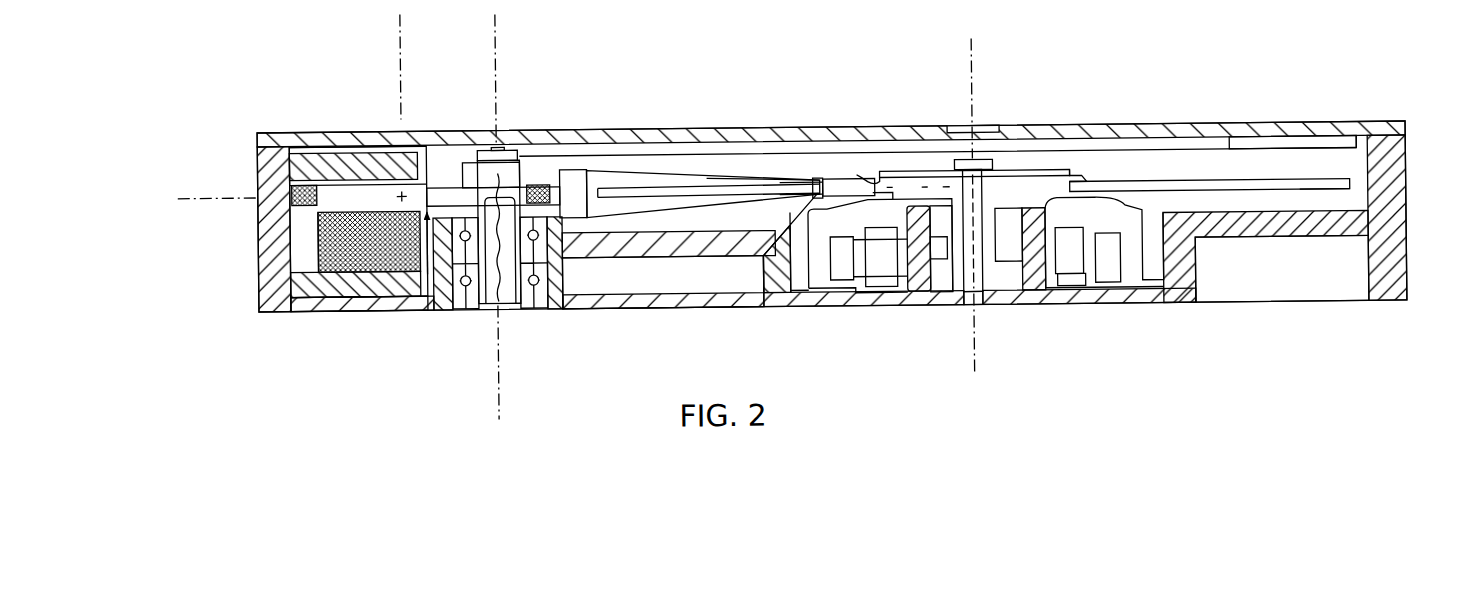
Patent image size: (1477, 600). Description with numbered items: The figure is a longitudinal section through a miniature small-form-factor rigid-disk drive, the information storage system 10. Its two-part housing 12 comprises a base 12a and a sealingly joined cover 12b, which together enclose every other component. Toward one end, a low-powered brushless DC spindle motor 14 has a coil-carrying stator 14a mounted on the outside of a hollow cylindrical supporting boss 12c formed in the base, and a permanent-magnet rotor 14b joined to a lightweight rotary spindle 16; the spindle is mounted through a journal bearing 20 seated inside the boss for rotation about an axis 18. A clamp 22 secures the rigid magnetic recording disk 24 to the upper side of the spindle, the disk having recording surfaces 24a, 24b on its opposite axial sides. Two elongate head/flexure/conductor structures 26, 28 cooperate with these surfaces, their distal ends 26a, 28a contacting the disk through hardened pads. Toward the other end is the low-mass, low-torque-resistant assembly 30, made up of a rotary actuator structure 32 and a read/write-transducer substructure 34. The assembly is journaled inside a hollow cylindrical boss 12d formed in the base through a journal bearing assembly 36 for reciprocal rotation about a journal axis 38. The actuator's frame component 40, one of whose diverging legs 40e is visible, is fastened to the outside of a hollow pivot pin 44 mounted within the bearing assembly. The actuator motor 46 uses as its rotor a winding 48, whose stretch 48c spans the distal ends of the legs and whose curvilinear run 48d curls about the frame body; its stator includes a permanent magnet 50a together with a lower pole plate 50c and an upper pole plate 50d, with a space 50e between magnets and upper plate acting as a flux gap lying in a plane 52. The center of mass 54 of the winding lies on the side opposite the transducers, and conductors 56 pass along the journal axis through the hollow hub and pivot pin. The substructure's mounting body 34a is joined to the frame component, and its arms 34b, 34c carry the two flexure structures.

The information storage system 10 is at (863, 80).
The housing 12 is at (1409, 176).
The base 12a is at (1400, 258).
The cover 12b is at (1360, 130).
The supporting boss 12c is at (1006, 293).
The boss 12d is at (560, 301).
The spindle motor 14 is at (1118, 302).
The coil-carrying stator 14a is at (1076, 289).
The permanent-magnet rotor 14b is at (1115, 252).
The rotary spindle 16 is at (966, 294).
The axis 18 is at (975, 76).
The journal bearing 20 is at (944, 210).
The clamp 22 is at (1041, 172).
The rigid magnetic recording disk 24 is at (1251, 182).
The recording surface 24a is at (1302, 182).
The recording surface 24b is at (1292, 196).
The head/flexure/conductor structure 26 is at (750, 176).
The distal end 26a is at (838, 178).
The head/flexure/conductor structure 28 is at (758, 206).
The distal end 28a is at (763, 258).
The assembly 30 is at (294, 229).
The rotary actuator structure 32 is at (440, 165).
The read/write-transducer substructure 34 is at (694, 169).
The mounting body 34a is at (588, 170).
The arm 34b is at (660, 176).
The arm 34c is at (645, 206).
The journal bearing assembly 36 is at (430, 306).
The journal axis 38 is at (500, 55).
The frame component 40 is at (349, 283).
The leg 40e is at (320, 258).
The pivot pin 44 is at (490, 306).
The actuator motor 46 is at (318, 286).
The winding 48 is at (290, 190).
The stretch 48c is at (290, 203).
The curvilinear run 48d is at (548, 181).
The permanent magnet 50a is at (262, 307).
The lower pole plate 50c is at (367, 296).
The upper pole plate 50d is at (370, 150).
The space 50e is at (356, 190).
The plane 52 is at (192, 190).
The center of mass 54 is at (452, 165).
The conductors 56 is at (515, 306).